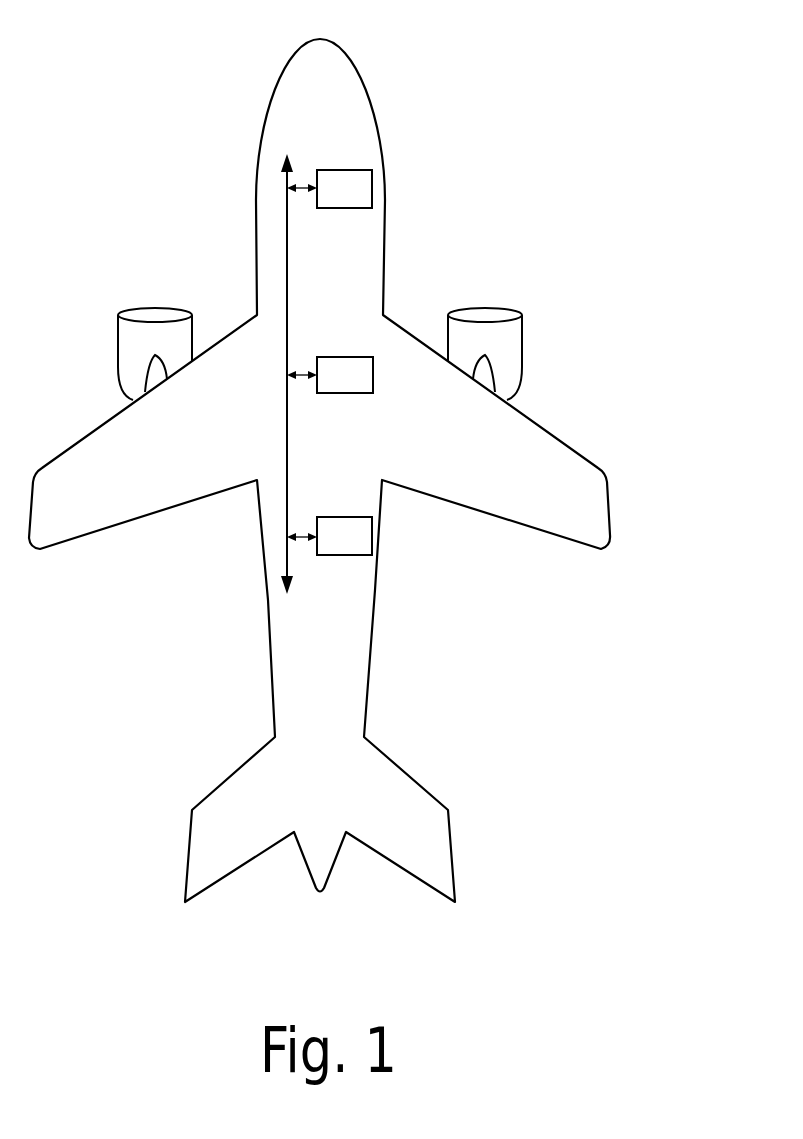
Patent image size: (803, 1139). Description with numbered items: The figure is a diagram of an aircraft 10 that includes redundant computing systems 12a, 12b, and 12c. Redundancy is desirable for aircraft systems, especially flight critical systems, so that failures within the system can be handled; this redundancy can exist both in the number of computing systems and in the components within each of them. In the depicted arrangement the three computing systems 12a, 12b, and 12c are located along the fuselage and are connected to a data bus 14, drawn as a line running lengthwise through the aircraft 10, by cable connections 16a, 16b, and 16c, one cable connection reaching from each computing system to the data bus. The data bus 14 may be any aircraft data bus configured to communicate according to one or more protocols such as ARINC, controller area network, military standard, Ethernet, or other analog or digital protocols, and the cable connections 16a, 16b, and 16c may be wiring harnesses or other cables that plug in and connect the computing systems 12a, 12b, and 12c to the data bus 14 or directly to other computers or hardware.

The aircraft 10 is at (348, 55).
The redundant computing system 12a is at (367, 204).
The redundant computing system 12b is at (367, 390).
The redundant computing system 12c is at (367, 551).
The data bus 14 is at (287, 248).
The cable connection 16a is at (305, 183).
The cable connection 16b is at (305, 371).
The cable connection 16c is at (303, 532).